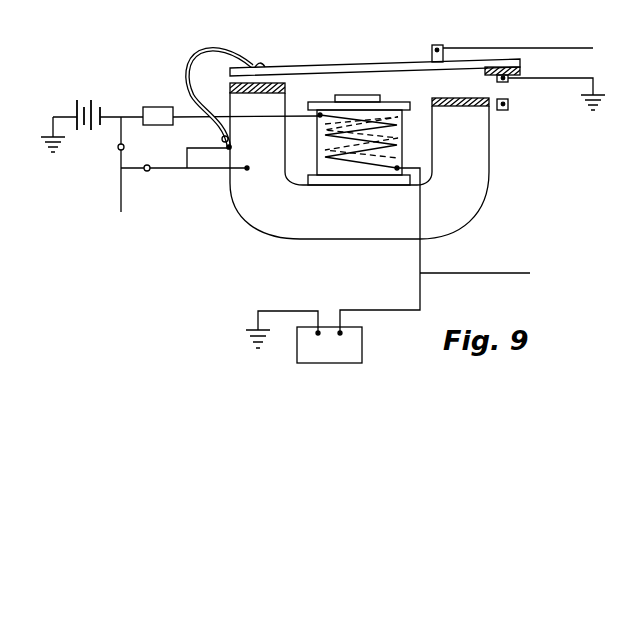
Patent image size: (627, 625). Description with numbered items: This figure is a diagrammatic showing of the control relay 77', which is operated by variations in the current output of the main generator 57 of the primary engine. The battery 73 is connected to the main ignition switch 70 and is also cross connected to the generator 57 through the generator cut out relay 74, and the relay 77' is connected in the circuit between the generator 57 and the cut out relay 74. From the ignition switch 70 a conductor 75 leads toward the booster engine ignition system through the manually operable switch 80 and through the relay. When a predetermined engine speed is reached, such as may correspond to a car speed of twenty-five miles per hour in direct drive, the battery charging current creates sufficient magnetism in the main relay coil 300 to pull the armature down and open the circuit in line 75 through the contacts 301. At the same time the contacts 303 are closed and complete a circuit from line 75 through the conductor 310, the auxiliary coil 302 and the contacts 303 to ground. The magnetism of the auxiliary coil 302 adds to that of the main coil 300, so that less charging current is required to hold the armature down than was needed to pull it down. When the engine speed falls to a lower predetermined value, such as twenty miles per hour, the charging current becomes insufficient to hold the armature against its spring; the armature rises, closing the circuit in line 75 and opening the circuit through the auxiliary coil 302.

The battery 73 is at (88, 103).
The generator cut out relay 74 is at (170, 93).
The main ignition switch 70 is at (118, 147).
The manually operable switch 80 is at (148, 171).
The conductor 75 is at (177, 170).
The conductor 310 is at (187, 152).
The contacts 301 is at (432, 52).
The contacts 303 is at (509, 103).
The relay 77' is at (380, 161).
The main relay coil 300 is at (400, 152).
The auxiliary coil 302 is at (398, 135).
The generator 57 is at (315, 363).